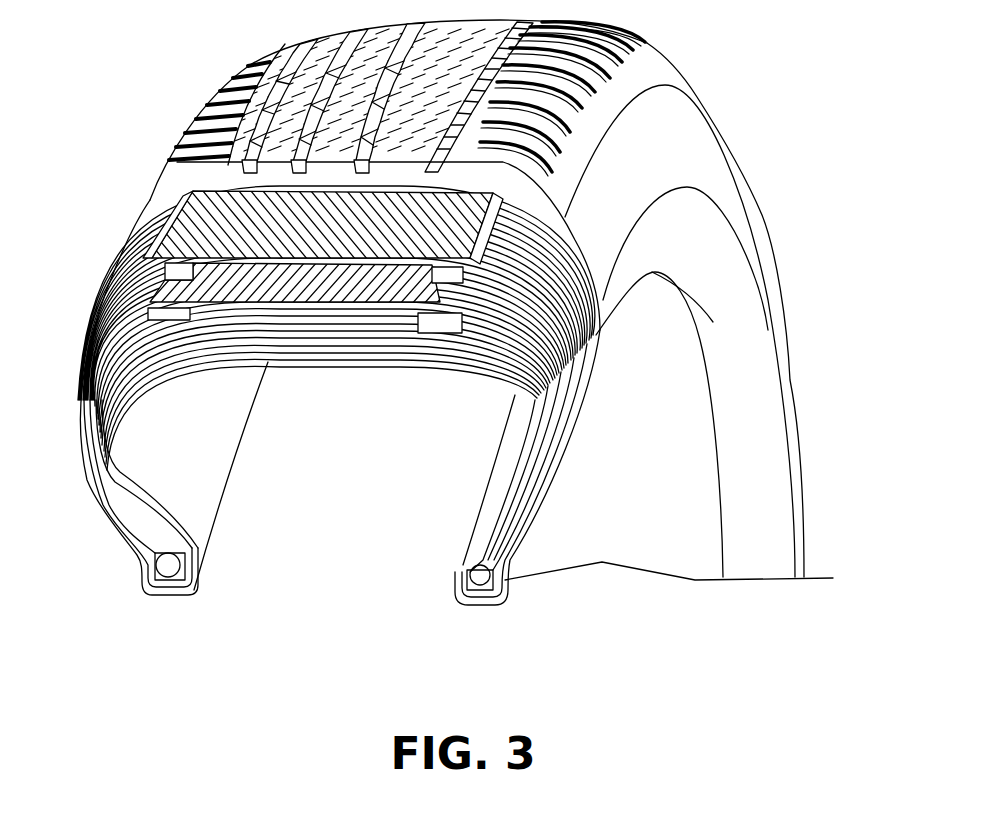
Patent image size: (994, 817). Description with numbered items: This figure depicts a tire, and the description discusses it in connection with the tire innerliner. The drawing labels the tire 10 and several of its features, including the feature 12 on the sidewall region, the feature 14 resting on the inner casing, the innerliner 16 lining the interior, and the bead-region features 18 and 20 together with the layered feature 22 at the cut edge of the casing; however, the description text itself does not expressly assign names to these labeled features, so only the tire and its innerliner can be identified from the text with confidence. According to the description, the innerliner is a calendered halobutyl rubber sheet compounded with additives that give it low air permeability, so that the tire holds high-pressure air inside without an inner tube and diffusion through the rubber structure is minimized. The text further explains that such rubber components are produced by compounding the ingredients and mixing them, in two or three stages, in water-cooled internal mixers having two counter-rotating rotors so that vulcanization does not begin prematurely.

The tire 10 is at (293, 110).
The sidewall 12 is at (690, 167).
The electronic device module 14 is at (232, 287).
The innerliner 16 is at (103, 393).
The bead 18 is at (490, 558).
The bead core 20 is at (472, 582).
The belt package 22 is at (558, 407).